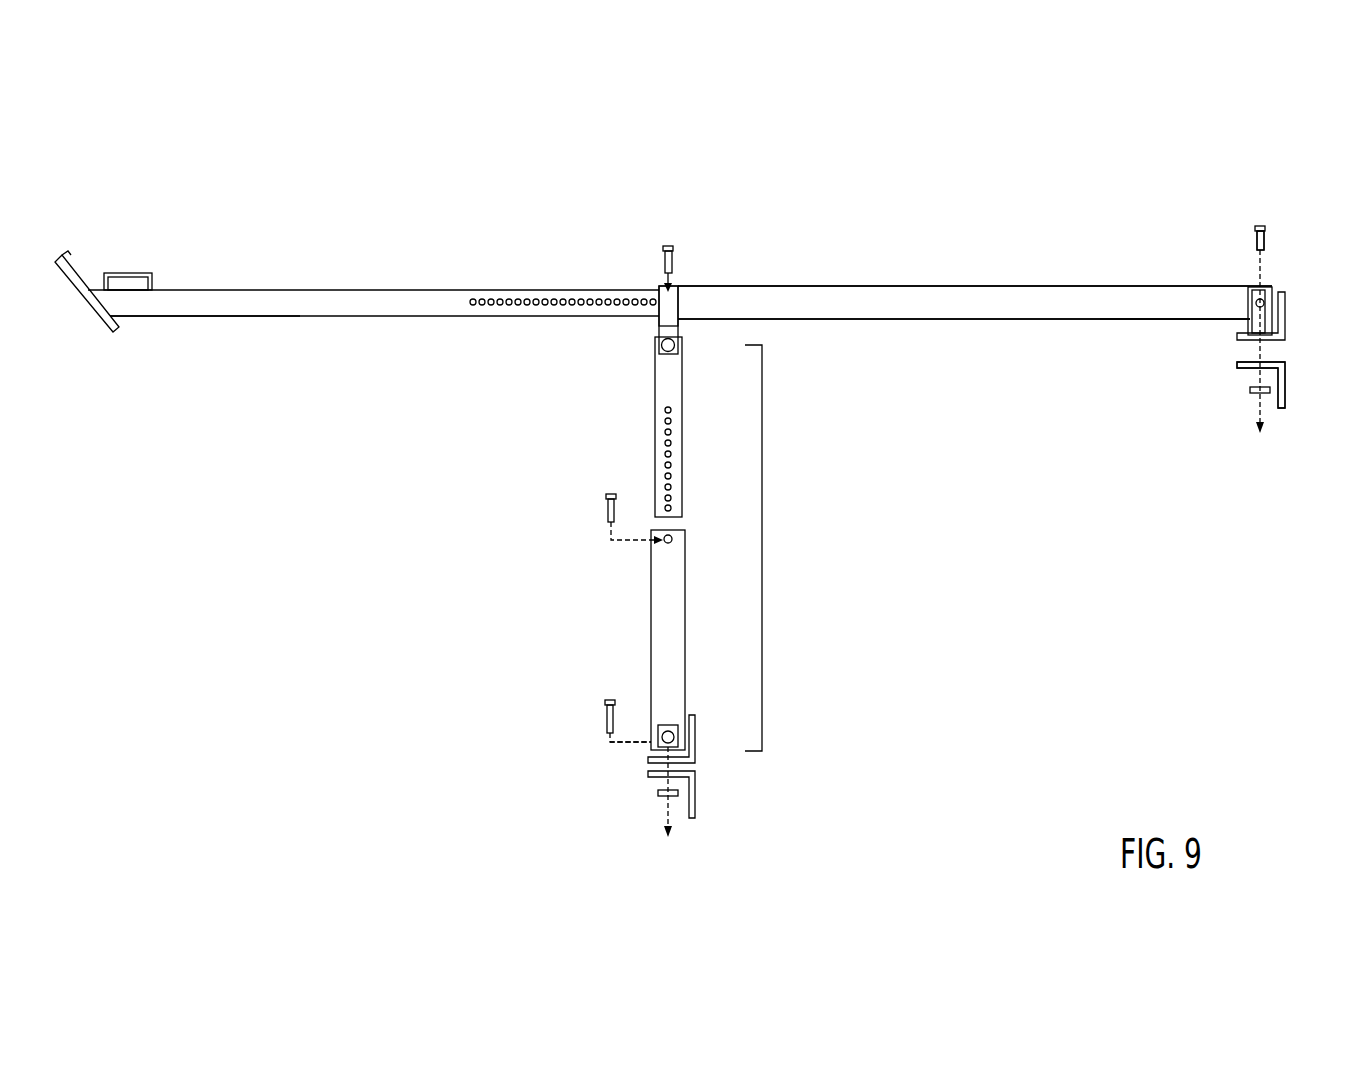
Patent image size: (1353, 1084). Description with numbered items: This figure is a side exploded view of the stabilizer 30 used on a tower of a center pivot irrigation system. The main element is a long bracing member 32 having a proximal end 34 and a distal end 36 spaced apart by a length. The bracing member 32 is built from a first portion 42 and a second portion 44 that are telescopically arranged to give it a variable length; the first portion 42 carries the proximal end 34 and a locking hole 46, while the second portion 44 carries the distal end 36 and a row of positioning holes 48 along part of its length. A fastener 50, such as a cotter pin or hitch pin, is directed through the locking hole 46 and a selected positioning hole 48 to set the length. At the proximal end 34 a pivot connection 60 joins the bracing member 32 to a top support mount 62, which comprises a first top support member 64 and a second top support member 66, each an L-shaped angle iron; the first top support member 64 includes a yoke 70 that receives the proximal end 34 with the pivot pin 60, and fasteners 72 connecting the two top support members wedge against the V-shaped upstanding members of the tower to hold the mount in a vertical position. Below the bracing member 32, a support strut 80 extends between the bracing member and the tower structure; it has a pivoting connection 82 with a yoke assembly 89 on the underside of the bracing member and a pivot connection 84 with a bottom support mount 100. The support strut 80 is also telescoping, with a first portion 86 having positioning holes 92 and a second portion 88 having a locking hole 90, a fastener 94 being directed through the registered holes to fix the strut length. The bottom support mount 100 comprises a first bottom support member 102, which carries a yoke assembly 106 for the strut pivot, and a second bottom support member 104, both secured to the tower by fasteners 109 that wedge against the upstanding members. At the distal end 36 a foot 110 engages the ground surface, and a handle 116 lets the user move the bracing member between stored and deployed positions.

The stabilizer 30 is at (1046, 234).
The bracing member 32 is at (988, 288).
The proximal end 34 is at (1247, 284).
The distal end 36 is at (148, 318).
The bracing member first portion 42 is at (800, 287).
The bracing member second portion 44 is at (432, 290).
The locking hole 46 is at (672, 303).
The positioning holes 48 is at (547, 302).
The fastener 50 is at (666, 246).
The pivot connection 60 is at (1257, 301).
The top support mount 62 is at (1292, 354).
The first top support member 64 is at (1284, 292).
The second top support member 66 is at (1282, 408).
The yoke 70 is at (1248, 320).
The fasteners 72 is at (1263, 228).
The support strut 80 is at (762, 548).
The pivoting connection 82 is at (676, 348).
The pivot connection 84 is at (669, 731).
The support strut first portion 86 is at (656, 420).
The support strut second portion 88 is at (651, 606).
The yoke assembly 89 is at (665, 327).
The locking hole 90 is at (672, 539).
The positioning holes 92 is at (664, 465).
The fastener 94 is at (609, 497).
The bottom support mount 100 is at (728, 809).
The first bottom support member 102 is at (693, 715).
The second bottom support member 104 is at (693, 818).
The yoke assembly 106 is at (655, 753).
The fasteners 109 is at (607, 712).
The foot 110 is at (68, 252).
The handle 116 is at (140, 273).